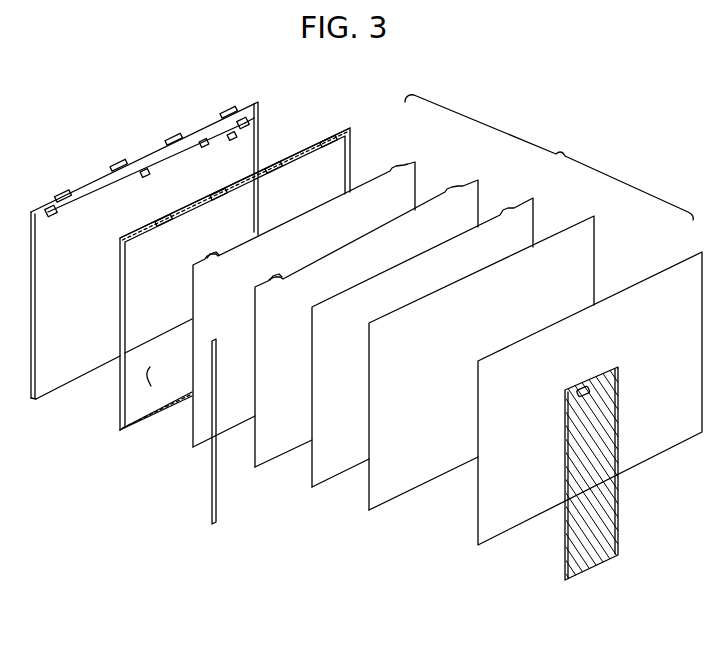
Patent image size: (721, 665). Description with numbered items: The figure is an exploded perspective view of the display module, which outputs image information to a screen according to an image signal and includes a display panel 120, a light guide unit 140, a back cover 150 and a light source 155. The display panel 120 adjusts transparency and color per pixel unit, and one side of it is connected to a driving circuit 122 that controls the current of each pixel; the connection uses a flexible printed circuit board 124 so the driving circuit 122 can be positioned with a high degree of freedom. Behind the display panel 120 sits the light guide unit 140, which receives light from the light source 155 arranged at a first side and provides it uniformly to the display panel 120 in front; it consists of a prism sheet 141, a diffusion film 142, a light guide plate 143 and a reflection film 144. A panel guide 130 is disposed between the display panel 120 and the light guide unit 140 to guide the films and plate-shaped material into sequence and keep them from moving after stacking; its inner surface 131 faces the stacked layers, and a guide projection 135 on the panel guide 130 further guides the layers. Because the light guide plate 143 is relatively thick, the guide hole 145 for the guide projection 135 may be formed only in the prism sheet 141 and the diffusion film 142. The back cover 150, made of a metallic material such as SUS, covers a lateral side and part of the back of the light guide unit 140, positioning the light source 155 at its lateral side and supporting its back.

The display panel 120 is at (250, 100).
The driving circuit 122 is at (153, 158).
The flexible printed circuit board 124 is at (63, 190).
The panel guide 130 is at (348, 128).
The inner surface of frame 131 is at (145, 385).
The guide projection 135 is at (157, 220).
The light guide unit 140 is at (549, 157).
The prism sheet 141 is at (406, 164).
The diffusion film 142 is at (519, 200).
The light guide plate 143 is at (570, 233).
The reflection film 144 is at (665, 278).
The guide hole 145 is at (277, 273).
The back cover 150 is at (605, 505).
The light source 155 is at (212, 492).